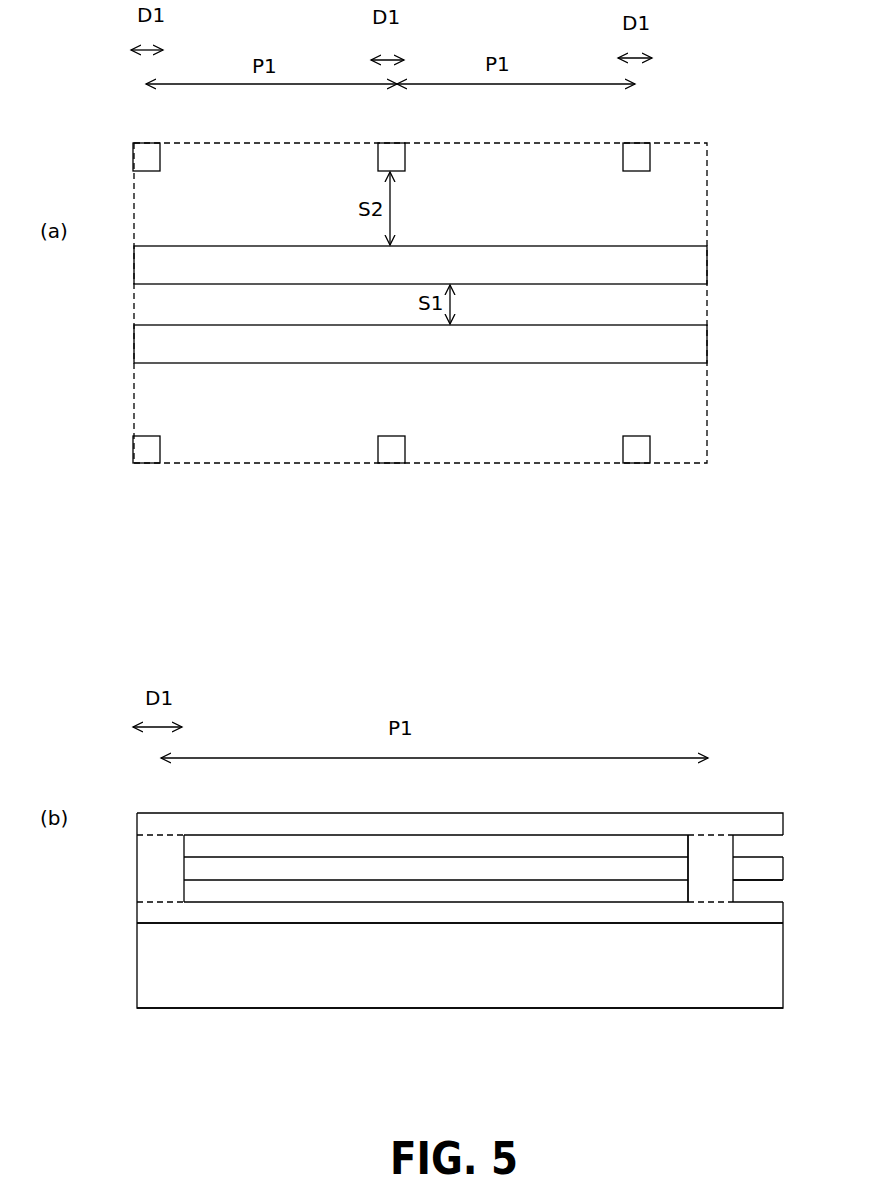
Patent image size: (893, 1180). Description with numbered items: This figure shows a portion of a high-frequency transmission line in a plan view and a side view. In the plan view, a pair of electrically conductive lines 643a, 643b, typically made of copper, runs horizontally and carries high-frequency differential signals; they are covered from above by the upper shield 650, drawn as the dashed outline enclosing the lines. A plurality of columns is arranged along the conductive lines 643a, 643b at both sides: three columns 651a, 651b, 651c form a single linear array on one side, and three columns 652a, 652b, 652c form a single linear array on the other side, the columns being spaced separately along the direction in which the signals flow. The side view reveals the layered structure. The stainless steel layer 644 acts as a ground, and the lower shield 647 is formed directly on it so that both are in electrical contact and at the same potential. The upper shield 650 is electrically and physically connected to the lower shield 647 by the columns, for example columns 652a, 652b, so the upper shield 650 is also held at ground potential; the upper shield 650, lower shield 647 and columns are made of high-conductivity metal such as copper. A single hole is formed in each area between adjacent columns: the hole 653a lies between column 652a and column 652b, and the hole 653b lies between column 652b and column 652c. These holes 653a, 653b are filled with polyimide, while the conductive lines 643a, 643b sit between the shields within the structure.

The upper shield 650 is at (707, 218).
The electrically conductive line 643a is at (707, 275).
The electrically conductive line 643b is at (707, 352).
The column 651a is at (160, 157).
The column 651b is at (405, 157).
The column 651c is at (623, 158).
The column 652a is at (160, 447).
The column 652b is at (405, 450).
The column 652c is at (622, 450).
The hole 653a is at (460, 902).
The hole 653b is at (765, 900).
The lower shield 647 is at (137, 908).
The stainless steel layer 644 is at (520, 1008).